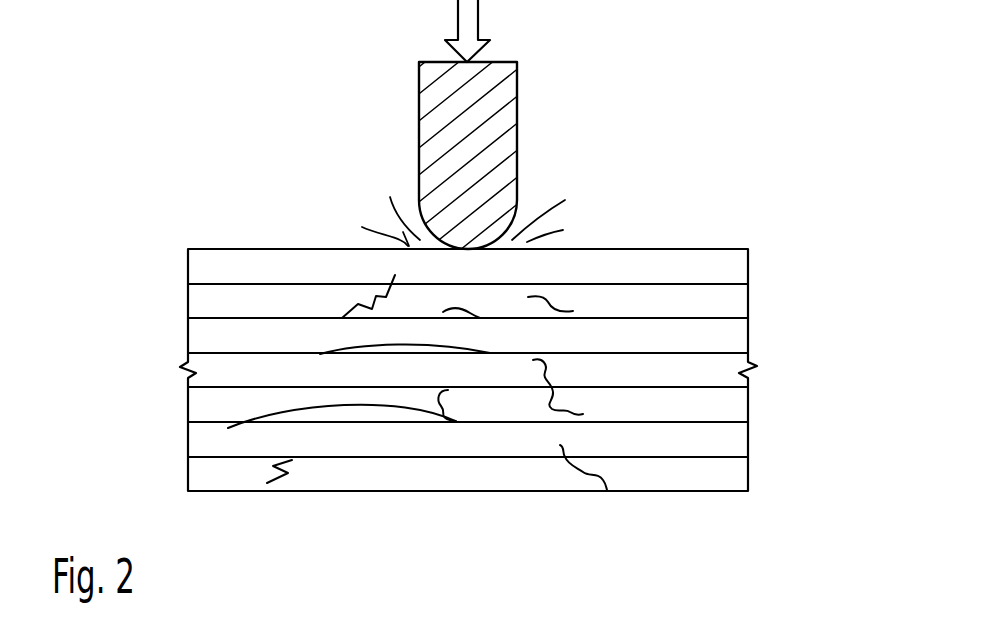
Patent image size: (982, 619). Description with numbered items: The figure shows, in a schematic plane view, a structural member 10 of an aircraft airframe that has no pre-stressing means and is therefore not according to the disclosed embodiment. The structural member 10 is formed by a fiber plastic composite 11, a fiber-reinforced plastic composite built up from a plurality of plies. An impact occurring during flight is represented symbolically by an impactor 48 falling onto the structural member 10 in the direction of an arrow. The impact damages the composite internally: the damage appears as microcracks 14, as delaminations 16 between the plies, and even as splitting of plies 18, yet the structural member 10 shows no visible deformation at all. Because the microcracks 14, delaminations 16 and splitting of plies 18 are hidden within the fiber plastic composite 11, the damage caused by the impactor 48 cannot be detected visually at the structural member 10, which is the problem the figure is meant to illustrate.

The structural member 10 is at (732, 237).
The fiber plastic composite 11 is at (796, 464).
The microcracks 14 is at (357, 305).
The delaminations 16 is at (457, 347).
The splitting of plies 18 is at (347, 412).
The impactor 48 is at (502, 107).